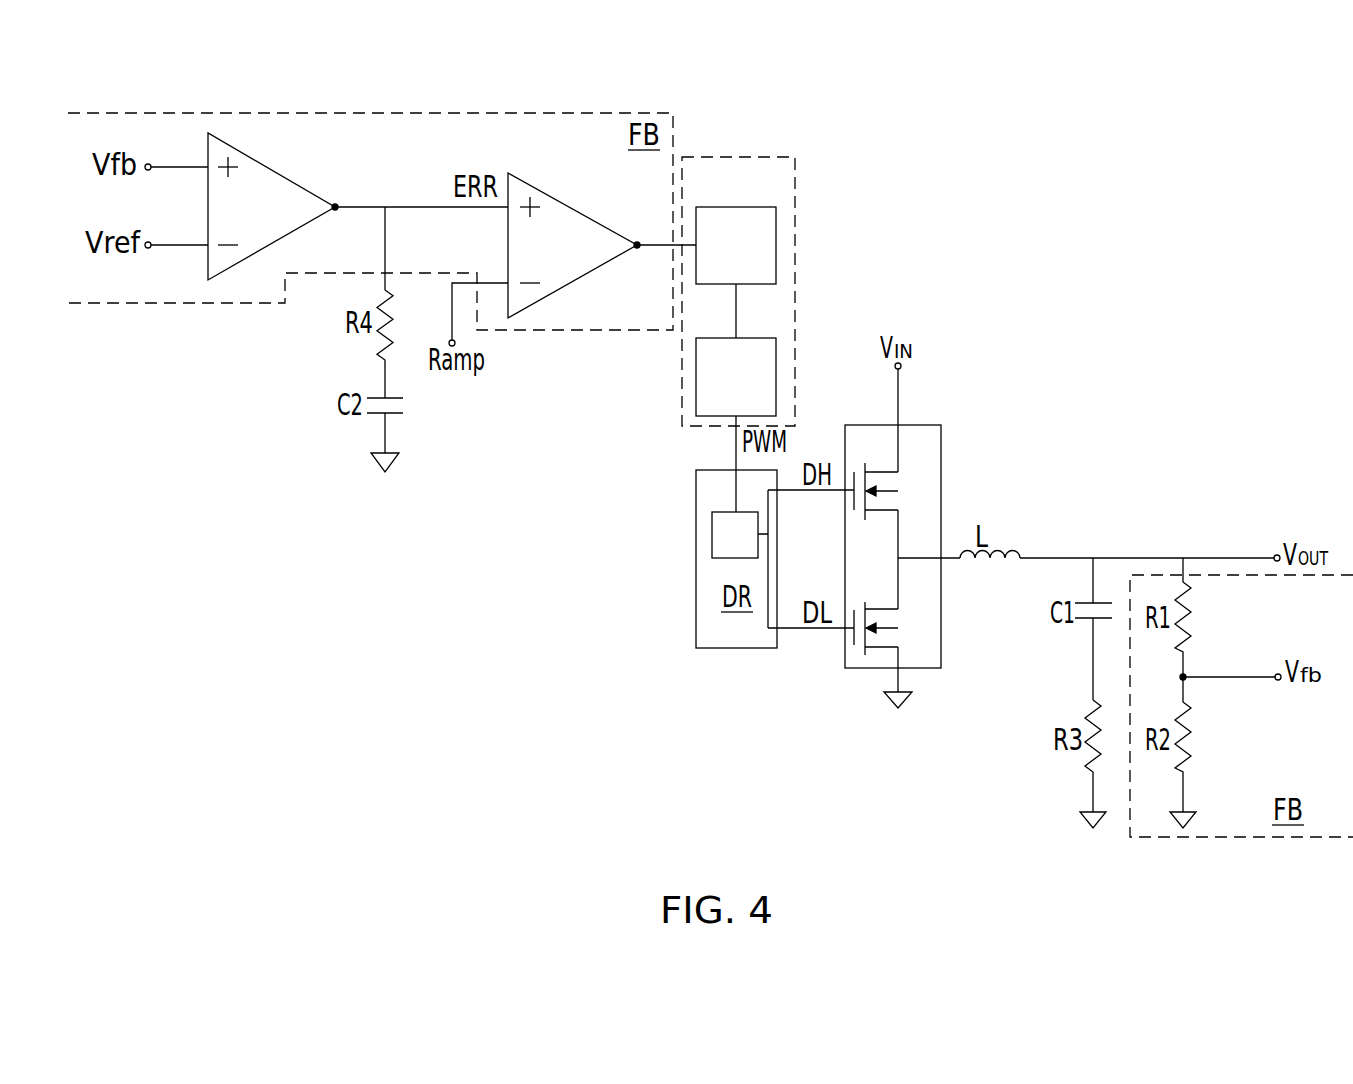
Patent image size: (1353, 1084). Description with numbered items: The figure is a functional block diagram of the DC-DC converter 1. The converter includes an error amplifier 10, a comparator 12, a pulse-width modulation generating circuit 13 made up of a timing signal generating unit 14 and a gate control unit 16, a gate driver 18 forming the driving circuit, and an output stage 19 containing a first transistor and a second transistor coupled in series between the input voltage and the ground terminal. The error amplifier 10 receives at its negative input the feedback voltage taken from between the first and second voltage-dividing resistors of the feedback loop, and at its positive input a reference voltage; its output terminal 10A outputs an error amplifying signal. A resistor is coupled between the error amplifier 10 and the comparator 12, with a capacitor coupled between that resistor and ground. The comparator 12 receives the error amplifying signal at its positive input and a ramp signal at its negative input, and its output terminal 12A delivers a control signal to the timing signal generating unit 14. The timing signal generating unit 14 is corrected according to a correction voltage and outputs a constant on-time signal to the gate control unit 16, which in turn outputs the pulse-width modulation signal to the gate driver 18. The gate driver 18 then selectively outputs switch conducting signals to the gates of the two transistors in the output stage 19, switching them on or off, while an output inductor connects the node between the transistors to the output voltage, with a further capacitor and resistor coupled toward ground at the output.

The DC-DC converter 1 is at (78, 97).
The error amplifier 10 is at (301, 218).
The output terminal of the error amplifier 10A is at (416, 189).
The comparator 12 is at (581, 258).
The output terminal of the comparator 12A is at (660, 228).
The pulse-width modulation generating circuit 13 is at (751, 191).
The timing signal generating unit 14 is at (751, 259).
The gate control unit 16 is at (751, 392).
The gate driver 18 is at (751, 547).
The output stage 19 is at (920, 425).